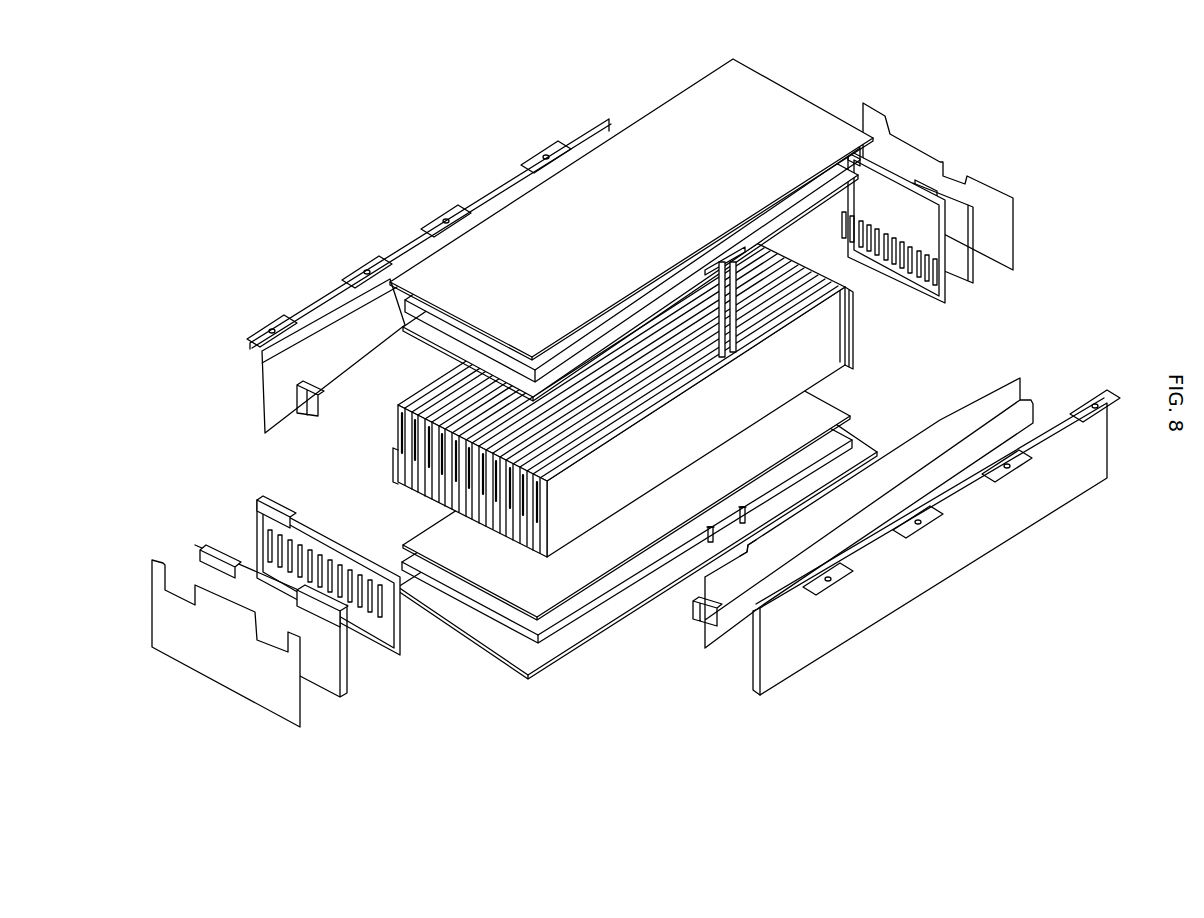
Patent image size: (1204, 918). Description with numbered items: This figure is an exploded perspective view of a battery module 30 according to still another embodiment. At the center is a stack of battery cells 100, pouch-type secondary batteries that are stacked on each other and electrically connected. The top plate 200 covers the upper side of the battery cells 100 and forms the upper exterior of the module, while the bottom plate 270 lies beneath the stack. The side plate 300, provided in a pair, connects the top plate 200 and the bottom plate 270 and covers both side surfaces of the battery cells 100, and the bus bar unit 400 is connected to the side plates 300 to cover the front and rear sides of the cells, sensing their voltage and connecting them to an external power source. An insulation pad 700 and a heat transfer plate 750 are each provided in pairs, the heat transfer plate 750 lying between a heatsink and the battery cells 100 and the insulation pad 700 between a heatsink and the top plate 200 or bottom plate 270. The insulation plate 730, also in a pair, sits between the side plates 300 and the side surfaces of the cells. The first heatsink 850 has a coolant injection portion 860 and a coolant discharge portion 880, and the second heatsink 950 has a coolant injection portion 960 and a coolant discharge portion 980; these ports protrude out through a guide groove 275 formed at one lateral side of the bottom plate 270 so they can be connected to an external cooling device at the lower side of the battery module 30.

The battery module 30 is at (636, 398).
The battery cell 100 is at (867, 321).
The top plate 200 is at (722, 72).
The bottom plate 270 is at (540, 662).
The guide groove 275 is at (723, 548).
The side plate 300 is at (823, 639).
The bus bar unit 400 is at (345, 708).
The insulation pad 700 is at (417, 300).
The insulation plate 730 is at (722, 633).
The heat transfer plate 750 is at (422, 333).
The first heatsink 850 is at (853, 183).
The coolant injection portion 860 is at (722, 253).
The coolant discharge portion 880 is at (733, 253).
The second heatsink 950 is at (508, 613).
The coolant injection portion 960 is at (708, 532).
The coolant discharge portion 980 is at (742, 512).